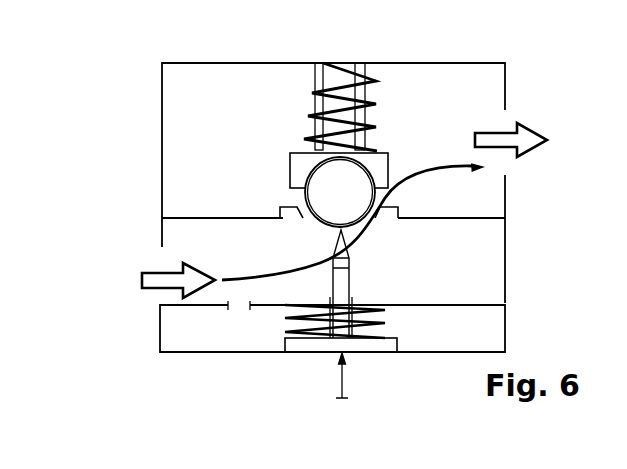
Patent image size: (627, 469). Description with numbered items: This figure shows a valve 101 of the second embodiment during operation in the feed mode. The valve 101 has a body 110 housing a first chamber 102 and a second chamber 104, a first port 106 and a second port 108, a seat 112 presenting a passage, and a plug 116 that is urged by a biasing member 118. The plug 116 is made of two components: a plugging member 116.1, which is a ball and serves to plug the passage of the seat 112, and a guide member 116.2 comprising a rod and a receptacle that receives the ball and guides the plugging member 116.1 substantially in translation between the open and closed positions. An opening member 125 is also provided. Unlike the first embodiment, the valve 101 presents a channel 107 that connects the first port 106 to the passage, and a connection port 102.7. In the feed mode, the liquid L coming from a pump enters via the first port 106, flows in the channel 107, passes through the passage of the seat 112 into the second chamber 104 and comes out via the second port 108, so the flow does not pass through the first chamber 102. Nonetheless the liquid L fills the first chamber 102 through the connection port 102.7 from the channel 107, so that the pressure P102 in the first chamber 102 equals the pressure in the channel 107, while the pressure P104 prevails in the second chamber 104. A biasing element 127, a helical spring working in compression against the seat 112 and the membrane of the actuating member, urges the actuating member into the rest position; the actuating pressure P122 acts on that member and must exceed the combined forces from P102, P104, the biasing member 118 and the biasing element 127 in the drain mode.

The valve 101 is at (92, 65).
The body 110 is at (162, 77).
The second chamber 104 is at (182, 131).
The channel 107 is at (182, 233).
The biasing member 118 is at (312, 94).
The plug 116 is at (212, 148).
The guide member 116.2 is at (292, 167).
The plugging member 116.1 is at (308, 193).
The seat 112 is at (283, 212).
The first port 106 is at (156, 259).
The second port 108 is at (507, 117).
The liquid L is at (152, 281).
The first chamber 102 is at (166, 322).
The connection port 102.7 is at (238, 318).
The opening member 125 is at (349, 273).
The biasing element 127 is at (385, 313).
The pressure of the liquid in the second chamber P104 is at (472, 80).
The pressure of the liquid in the first chamber P102 is at (475, 318).
The actuating pressure P122 is at (343, 392).